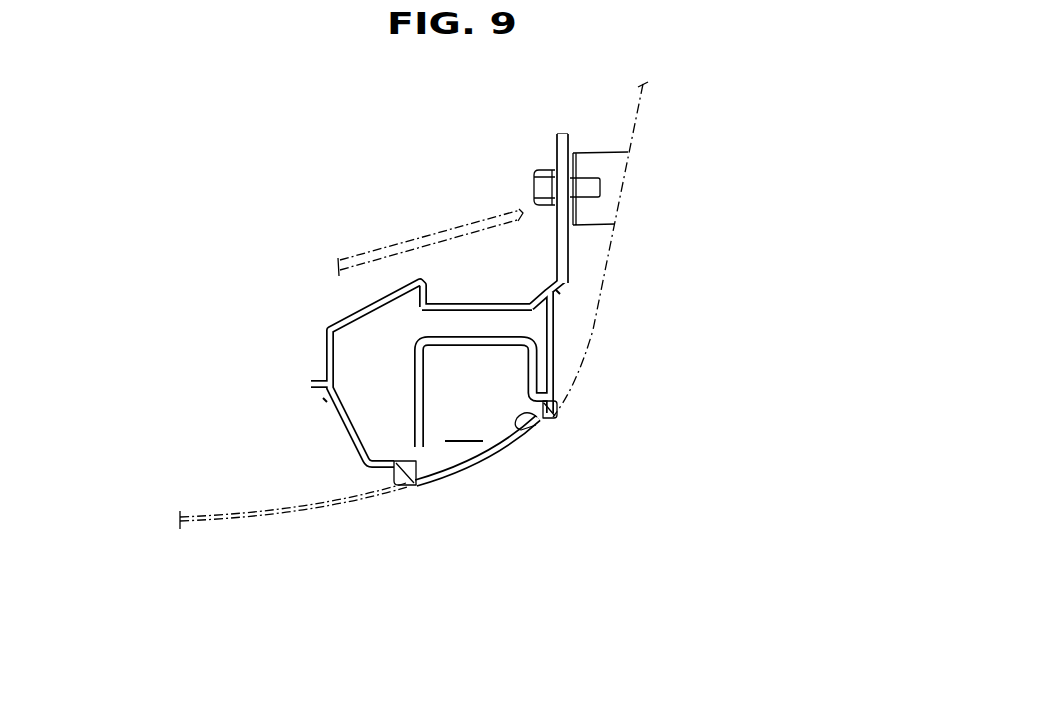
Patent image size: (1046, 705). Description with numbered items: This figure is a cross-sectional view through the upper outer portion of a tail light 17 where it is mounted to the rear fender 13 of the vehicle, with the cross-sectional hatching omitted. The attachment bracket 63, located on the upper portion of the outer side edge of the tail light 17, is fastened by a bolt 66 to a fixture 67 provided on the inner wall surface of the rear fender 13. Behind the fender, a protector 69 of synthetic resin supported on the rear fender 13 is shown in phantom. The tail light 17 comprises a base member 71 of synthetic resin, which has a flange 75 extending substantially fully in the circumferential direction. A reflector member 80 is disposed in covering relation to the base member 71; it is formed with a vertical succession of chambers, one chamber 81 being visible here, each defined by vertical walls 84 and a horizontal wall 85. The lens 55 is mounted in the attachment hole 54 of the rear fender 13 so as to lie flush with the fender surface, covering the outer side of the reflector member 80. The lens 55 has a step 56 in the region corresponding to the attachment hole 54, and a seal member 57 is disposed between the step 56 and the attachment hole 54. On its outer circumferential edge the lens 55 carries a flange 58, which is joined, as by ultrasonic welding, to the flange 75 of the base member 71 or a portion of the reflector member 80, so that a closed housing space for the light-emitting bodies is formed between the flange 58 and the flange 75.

In FIG. 9-rest, the rear fender 13 is at (580, 377).
In FIG. 9, the tail light 17 is at (444, 506).
In FIG. 9-rest, the attachment hole 54 is at (556, 424).
In FIG. 9, the lens 55 is at (480, 462).
In FIG. 9-rest, the step 56 is at (514, 438).
In FIG. 9-rest, the seal member 57 is at (393, 472).
In FIG. 9-rest, the flange 58 is at (323, 399).
In FIG. 9, the attachment bracket 63 is at (560, 147).
In FIG. 9-rest, the bolt 66 is at (534, 187).
In FIG. 9-rest, the fixture 67 is at (604, 172).
In FIG. 9-rest, the protector 69 is at (447, 228).
In FIG. 9, the base member 71 is at (470, 306).
In FIG. 9, the flange 75 is at (547, 284).
In FIG. 9-rest, the reflector member 80 is at (412, 335).
In FIG. 9-rest, the chamber 81 is at (464, 425).
In FIG. 9, the vertical wall 84 is at (414, 384).
In FIG. 9, the horizontal wall 85 is at (477, 346).